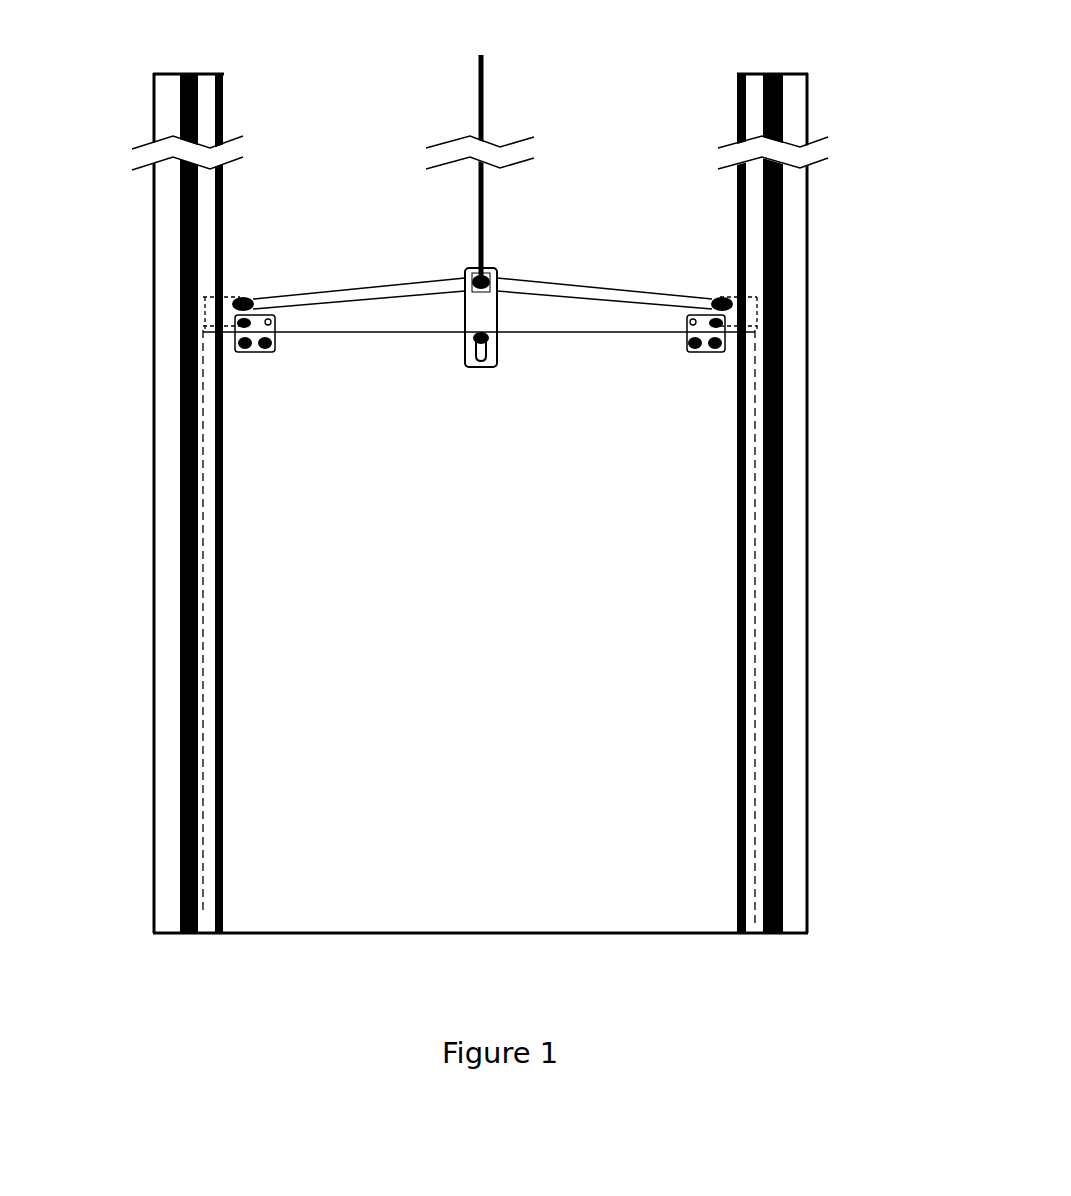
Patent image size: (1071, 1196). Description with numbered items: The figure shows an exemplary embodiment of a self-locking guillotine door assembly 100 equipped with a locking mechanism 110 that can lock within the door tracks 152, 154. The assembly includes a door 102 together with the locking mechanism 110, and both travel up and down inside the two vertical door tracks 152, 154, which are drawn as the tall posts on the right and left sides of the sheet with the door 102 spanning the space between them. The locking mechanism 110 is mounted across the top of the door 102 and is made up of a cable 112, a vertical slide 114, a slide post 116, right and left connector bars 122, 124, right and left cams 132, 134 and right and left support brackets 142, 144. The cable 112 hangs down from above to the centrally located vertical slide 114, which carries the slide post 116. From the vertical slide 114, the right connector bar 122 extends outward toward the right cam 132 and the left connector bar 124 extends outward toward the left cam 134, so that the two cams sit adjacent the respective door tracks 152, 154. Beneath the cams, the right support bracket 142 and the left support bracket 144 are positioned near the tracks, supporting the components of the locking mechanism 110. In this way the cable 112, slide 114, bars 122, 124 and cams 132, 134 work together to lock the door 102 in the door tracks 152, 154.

The self-locking guillotine door assembly 100 is at (785, 54).
The door 102 is at (562, 915).
The locking mechanism 110 is at (342, 135).
The cable 112 is at (486, 122).
The vertical slide 114 is at (487, 315).
The slide post 116 is at (470, 345).
The right connector bar 122 is at (529, 284).
The left connector bar 124 is at (345, 292).
The right cam 132 is at (728, 300).
The left cam 134 is at (247, 300).
The right support bracket 142 is at (698, 345).
The left support bracket 144 is at (262, 345).
The right door track 152 is at (800, 570).
The left door track 154 is at (158, 583).